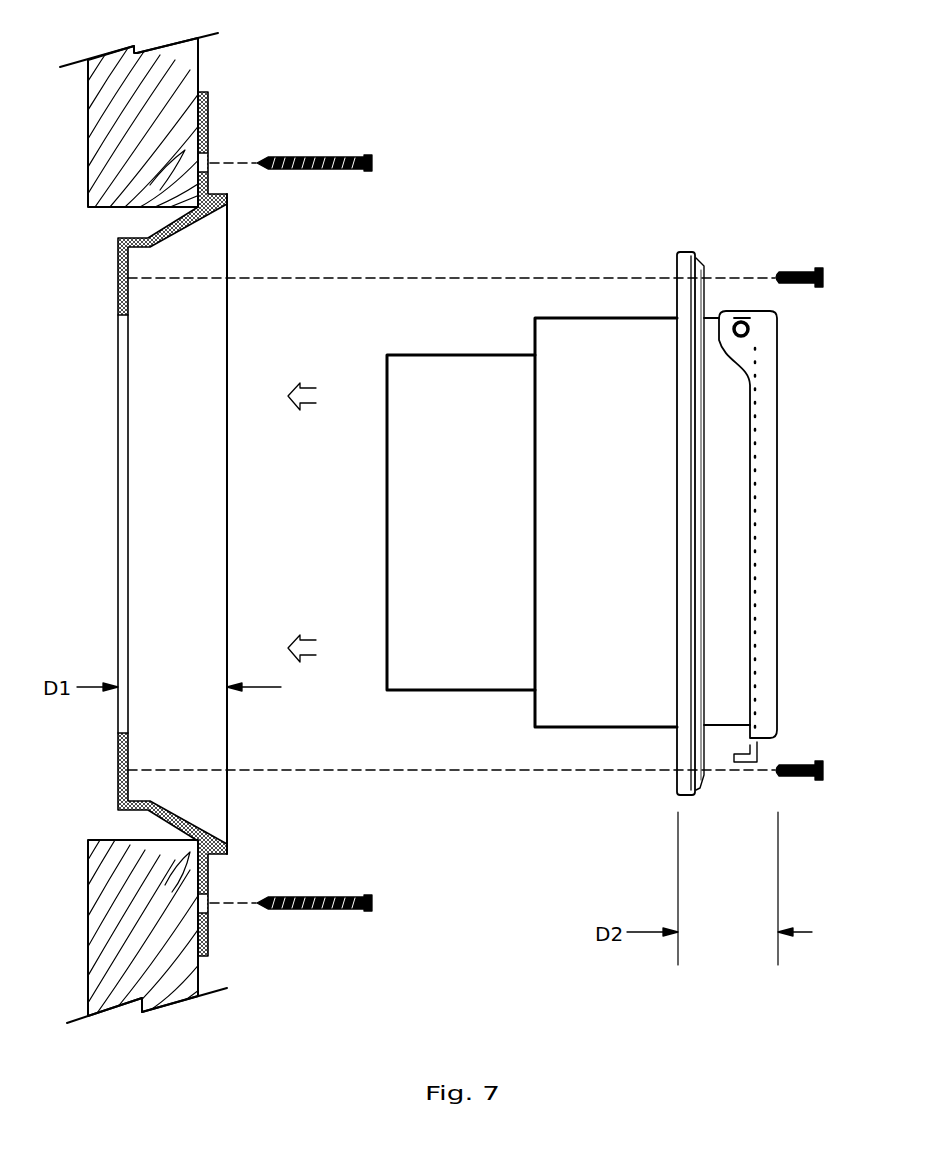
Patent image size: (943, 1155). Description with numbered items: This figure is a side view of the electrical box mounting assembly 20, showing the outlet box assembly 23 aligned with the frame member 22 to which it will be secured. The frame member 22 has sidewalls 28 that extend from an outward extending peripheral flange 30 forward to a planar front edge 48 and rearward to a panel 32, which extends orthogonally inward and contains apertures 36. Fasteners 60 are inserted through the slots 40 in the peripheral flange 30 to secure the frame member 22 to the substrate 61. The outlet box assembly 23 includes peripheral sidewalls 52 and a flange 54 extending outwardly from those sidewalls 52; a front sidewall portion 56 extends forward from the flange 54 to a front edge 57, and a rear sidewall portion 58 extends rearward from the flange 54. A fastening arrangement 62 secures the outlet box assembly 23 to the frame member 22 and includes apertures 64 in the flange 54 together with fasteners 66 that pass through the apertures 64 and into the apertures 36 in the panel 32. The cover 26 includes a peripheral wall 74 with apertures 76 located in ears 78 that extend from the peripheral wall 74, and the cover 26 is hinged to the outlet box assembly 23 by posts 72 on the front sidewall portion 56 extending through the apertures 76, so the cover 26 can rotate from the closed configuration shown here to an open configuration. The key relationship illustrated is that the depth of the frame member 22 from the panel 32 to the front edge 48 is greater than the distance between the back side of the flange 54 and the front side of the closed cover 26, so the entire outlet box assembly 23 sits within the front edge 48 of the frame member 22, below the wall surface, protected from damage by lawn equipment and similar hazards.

The electrical box mounting assembly 20 is at (560, 121).
The frame member 22 is at (266, 308).
The outlet box assembly 23 is at (550, 266).
The cover 26 is at (715, 522).
The sidewalls 28 is at (217, 502).
The peripheral flange 30 is at (217, 182).
The panel 32 is at (128, 305).
The apertures 36 is at (128, 278).
The slots 40 is at (210, 158).
The front edge 48 is at (227, 523).
The peripheral sidewalls 52 is at (605, 728).
The flange 54 is at (685, 251).
The front sidewall portion 56 is at (729, 500).
The front edge 57 is at (757, 620).
The rear sidewall portion 58 is at (532, 522).
The fasteners 60 is at (320, 160).
The substrate 61 is at (170, 62).
The fastening arrangement 62 is at (803, 224).
The apertures 64 is at (677, 276).
The fasteners 66 is at (778, 274).
The posts 72 is at (736, 332).
The peripheral wall 74 is at (765, 493).
The apertures 76 is at (762, 329).
The ears 78 is at (723, 347).